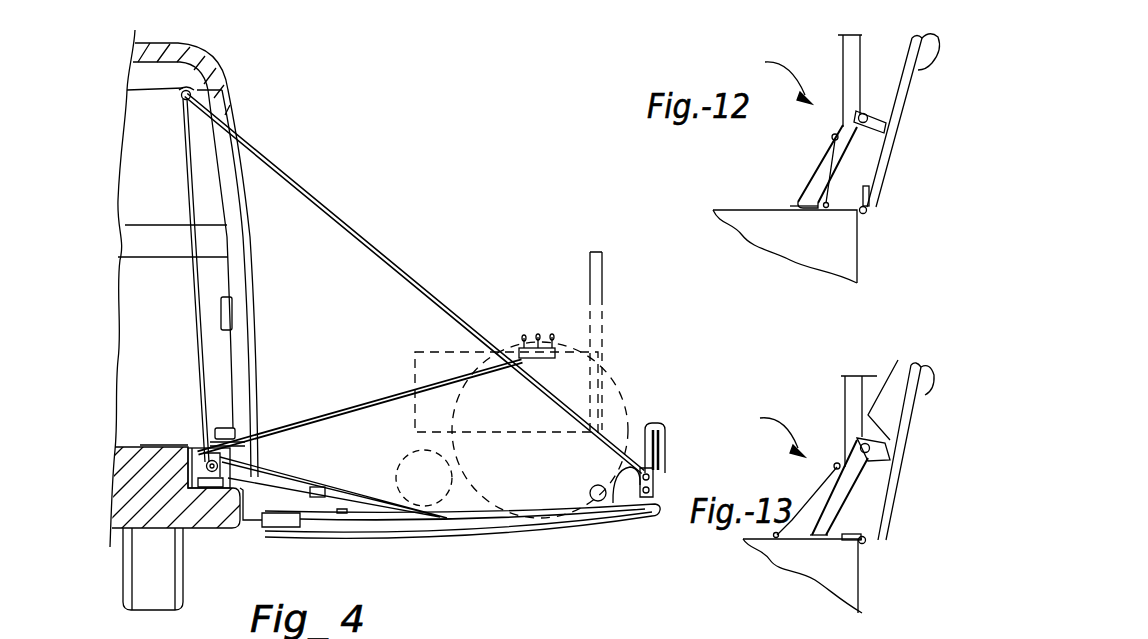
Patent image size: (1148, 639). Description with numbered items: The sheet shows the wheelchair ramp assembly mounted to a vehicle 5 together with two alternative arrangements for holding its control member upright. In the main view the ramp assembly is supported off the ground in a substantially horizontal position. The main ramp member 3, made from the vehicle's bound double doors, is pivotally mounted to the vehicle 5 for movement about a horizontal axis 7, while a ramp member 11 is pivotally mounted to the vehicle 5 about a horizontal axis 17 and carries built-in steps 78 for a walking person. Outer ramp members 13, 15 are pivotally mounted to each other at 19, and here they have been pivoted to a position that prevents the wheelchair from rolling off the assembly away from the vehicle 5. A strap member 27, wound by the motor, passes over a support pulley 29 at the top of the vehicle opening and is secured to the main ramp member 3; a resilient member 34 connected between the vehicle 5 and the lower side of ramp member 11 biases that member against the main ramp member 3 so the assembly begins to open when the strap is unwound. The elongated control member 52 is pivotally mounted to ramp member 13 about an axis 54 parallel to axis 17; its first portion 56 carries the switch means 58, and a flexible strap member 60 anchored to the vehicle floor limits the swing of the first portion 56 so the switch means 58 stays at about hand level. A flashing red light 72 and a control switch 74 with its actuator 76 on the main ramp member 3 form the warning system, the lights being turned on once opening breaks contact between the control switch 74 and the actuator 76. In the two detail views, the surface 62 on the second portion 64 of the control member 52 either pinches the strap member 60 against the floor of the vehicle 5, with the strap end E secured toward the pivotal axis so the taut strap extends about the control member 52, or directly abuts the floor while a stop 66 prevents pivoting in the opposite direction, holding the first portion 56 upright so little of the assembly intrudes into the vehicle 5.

In FIG. 4, the main ramp member 3 is at (560, 523).
In FIG. 4, the vehicle 5 is at (122, 472).
In FIG. 12, the vehicle 5 is at (764, 245).
In FIG. 13, the vehicle 5 is at (770, 557).
In FIG. 4, the axis 7 is at (252, 524).
In FIG. 4, the ramp member 11 is at (389, 498).
In FIG. 12, the ramp member 11 is at (907, 110).
In FIG. 13, the ramp member 11 is at (906, 430).
In FIG. 4, the outer ramp member 13 is at (643, 425).
In FIG. 4, the outer ramp member 15 is at (666, 453).
In FIG. 4, the horizontal axis 17 is at (140, 445).
In FIG. 12, the horizontal axis 17 is at (864, 214).
In FIG. 13, the horizontal axis 17 is at (864, 544).
In FIG. 4, the pivot 19 is at (657, 422).
In FIG. 4, the strap member 27 is at (370, 232).
In FIG. 4, the support pulley 29 is at (181, 96).
In FIG. 4, the resilient member 34 is at (270, 530).
In FIG. 12, the control member 52 is at (768, 79).
In FIG. 13, the control member 52 is at (763, 430).
In FIG. 12, the axis 54 is at (867, 113).
In FIG. 13, the axis 54 is at (872, 460).
In FIG. 4, the first portion 56 is at (354, 414).
In FIG. 12, the first portion 56 is at (860, 63).
In FIG. 13, the first portion 56 is at (841, 387).
In FIG. 4, the switch means 58 is at (537, 360).
In FIG. 4, the flexible strap member 60 is at (192, 448).
In FIG. 12, the flexible strap member 60 is at (798, 203).
In FIG. 12, the surface 62 is at (808, 203).
In FIG. 13, the surface 62 is at (835, 518).
In FIG. 12, the second portion 64 is at (838, 160).
In FIG. 13, the second portion 64 is at (837, 483).
In FIG. 13, the stop 66 is at (897, 362).
In FIG. 4, the flashing red light 72 is at (594, 488).
In FIG. 4, the control switch 74 is at (232, 428).
In FIG. 4, the actuator 76 is at (343, 515).
In FIG. 4, the built-in steps 78 is at (341, 494).
In FIG. 12, the end E is at (825, 212).
In FIG. 13, the end E is at (782, 543).